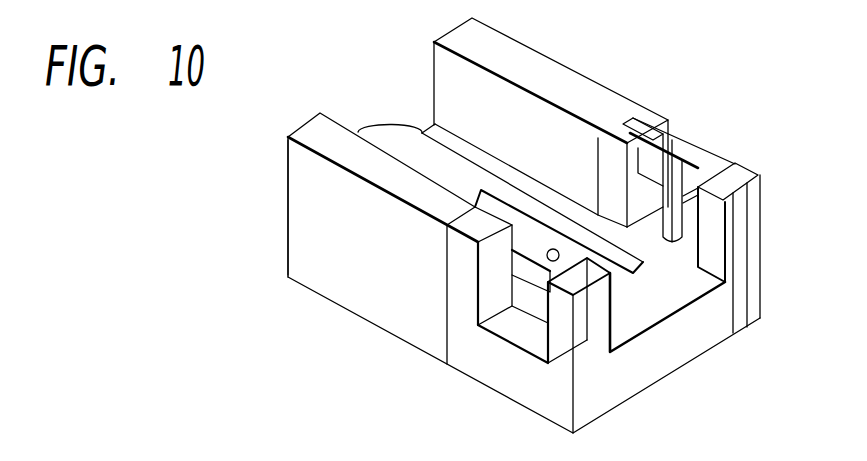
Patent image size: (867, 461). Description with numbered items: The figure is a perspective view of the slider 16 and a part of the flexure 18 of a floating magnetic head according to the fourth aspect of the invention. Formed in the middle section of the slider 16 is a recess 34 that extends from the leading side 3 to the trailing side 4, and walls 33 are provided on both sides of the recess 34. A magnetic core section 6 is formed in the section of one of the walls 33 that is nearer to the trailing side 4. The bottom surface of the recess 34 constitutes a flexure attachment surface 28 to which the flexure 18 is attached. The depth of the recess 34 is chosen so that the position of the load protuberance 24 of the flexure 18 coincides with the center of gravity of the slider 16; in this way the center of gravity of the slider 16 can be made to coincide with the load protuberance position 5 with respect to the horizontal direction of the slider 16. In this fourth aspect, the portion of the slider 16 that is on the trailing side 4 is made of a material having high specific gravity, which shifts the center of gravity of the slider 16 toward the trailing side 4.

The leading side 3 is at (283, 230).
The trailing side 4 is at (604, 398).
The load protuberance position 5 is at (630, 269).
The magnetic core section 6 is at (677, 147).
The slider 16 is at (483, 25).
The flexure 18 is at (386, 133).
The load protuberance 24 is at (549, 261).
The flexure attachment surface 28 is at (635, 323).
The walls 33 is at (400, 185).
The recess 34 is at (548, 180).